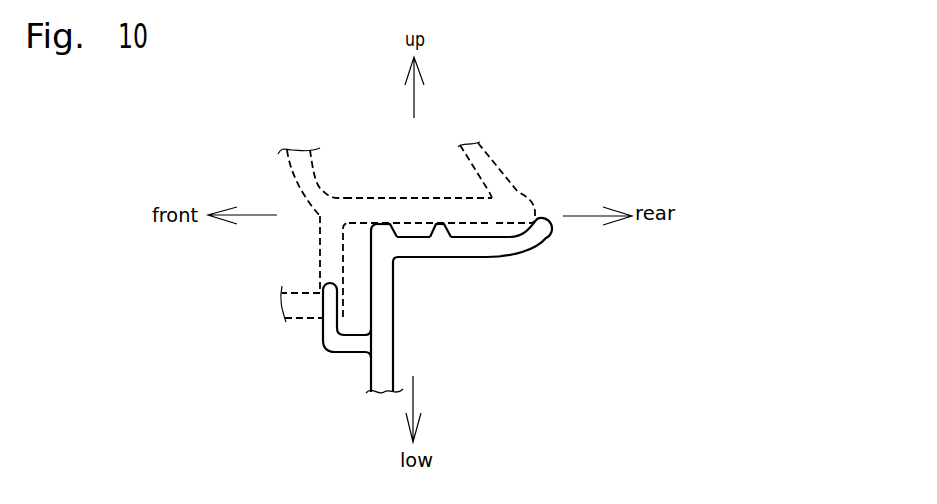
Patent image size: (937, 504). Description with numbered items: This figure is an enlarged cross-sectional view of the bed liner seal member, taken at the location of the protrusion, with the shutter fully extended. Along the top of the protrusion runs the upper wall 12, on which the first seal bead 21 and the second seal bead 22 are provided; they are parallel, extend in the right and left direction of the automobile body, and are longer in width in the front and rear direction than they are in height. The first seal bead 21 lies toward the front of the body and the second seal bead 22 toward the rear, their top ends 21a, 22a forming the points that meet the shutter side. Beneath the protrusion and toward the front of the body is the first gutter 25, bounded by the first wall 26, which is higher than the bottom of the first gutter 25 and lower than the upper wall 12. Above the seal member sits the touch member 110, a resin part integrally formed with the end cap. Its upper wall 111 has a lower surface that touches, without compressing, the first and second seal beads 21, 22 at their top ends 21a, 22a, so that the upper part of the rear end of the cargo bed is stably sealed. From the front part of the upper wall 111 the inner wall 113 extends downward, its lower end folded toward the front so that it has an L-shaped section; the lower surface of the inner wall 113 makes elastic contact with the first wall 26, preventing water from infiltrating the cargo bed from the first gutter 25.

The upper wall 12 is at (473, 247).
The first seal bead 21 is at (385, 228).
The top end of first seal bead 21a is at (386, 223).
The second seal bead 22 is at (438, 230).
The top end of second seal bead 22a is at (438, 224).
The first gutter 25 is at (353, 352).
The first wall 26 is at (333, 310).
The touch member 110 is at (518, 206).
The upper wall 111 is at (400, 213).
The inner wall 113 is at (320, 250).